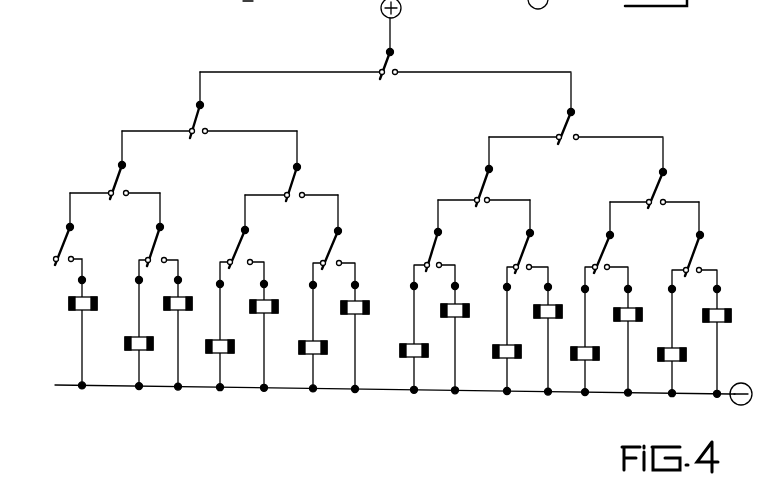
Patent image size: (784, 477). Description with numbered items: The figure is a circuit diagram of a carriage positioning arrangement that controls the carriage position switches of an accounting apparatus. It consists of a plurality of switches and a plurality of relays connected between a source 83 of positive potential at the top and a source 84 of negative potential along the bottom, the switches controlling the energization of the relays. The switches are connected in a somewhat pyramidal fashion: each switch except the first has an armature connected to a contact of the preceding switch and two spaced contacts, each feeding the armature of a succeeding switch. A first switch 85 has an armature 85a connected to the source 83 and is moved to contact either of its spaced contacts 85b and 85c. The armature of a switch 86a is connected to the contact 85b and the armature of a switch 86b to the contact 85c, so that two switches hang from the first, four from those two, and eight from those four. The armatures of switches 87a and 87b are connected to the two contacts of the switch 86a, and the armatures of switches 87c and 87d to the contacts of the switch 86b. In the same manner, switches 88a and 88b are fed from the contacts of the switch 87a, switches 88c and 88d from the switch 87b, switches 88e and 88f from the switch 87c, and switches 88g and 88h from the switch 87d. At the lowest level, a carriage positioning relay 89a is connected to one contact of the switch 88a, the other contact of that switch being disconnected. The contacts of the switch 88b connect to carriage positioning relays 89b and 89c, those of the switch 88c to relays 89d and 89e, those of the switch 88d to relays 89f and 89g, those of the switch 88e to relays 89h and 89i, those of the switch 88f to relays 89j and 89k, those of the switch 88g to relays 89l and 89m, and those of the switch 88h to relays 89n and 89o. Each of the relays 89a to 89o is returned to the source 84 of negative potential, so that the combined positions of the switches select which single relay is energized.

The source of positive potential 83 is at (407, 9).
The source of negative potential 84 is at (738, 404).
The first switch 85 is at (389, 76).
The armature 85a is at (384, 63).
The contact 85b is at (380, 80).
The contact 85c is at (395, 76).
The switch 86a is at (240, 126).
The switch 86b is at (607, 133).
The switch 87a is at (155, 187).
The switch 87b is at (331, 188).
The switch 87c is at (518, 193).
The switch 87d is at (692, 196).
The switch 88a is at (50, 248).
The switch 88b is at (147, 248).
The switch 88c is at (233, 250).
The switch 88d is at (323, 251).
The switch 88e is at (470, 254).
The switch 88f is at (560, 255).
The switch 88g is at (635, 260).
The switch 88h is at (728, 261).
The carriage positioning relay 89a is at (69, 303).
The carriage positioning relay 89b is at (125, 346).
The carriage positioning relay 89c is at (166, 305).
The carriage positioning relay 89d is at (206, 350).
The carriage positioning relay 89e is at (250, 306).
The carriage positioning relay 89f is at (299, 350).
The carriage positioning relay 89g is at (342, 305).
The carriage positioning relay 89h is at (400, 351).
The carriage positioning relay 89i is at (441, 305).
The carriage positioning relay 89j is at (493, 352).
The carriage positioning relay 89k is at (536, 306).
The carriage positioning relay 89l is at (571, 355).
The carriage positioning relay 89m is at (615, 309).
The carriage positioning relay 89n is at (658, 357).
The carriage positioning relay 89o is at (703, 311).